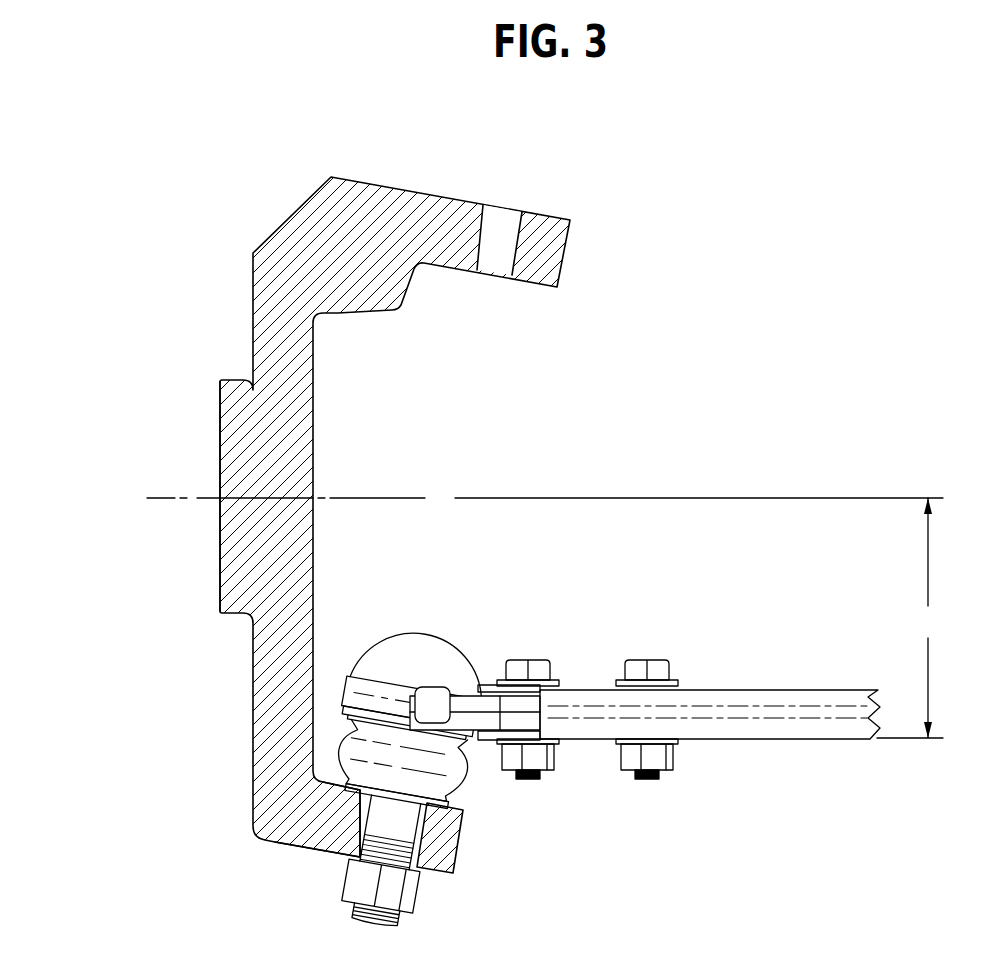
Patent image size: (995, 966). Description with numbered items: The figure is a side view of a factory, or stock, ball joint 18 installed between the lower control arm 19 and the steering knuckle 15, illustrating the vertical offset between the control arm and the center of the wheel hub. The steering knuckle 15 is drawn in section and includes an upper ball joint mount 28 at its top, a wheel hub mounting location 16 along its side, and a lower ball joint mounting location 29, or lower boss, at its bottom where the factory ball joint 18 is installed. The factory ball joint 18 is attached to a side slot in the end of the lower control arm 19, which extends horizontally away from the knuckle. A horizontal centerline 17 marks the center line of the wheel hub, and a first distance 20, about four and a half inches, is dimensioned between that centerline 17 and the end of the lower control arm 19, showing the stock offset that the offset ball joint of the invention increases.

The steering knuckle 15 is at (282, 333).
The wheel hub mounting location 16 is at (220, 410).
The centerline of wheel hub 17 is at (175, 497).
The factory ball joint 18 is at (445, 637).
The lower control arm 19 is at (697, 685).
The first distance 20 is at (910, 618).
The upper ball joint mount 28 is at (493, 223).
The lower ball joint mounting location 29 is at (315, 818).